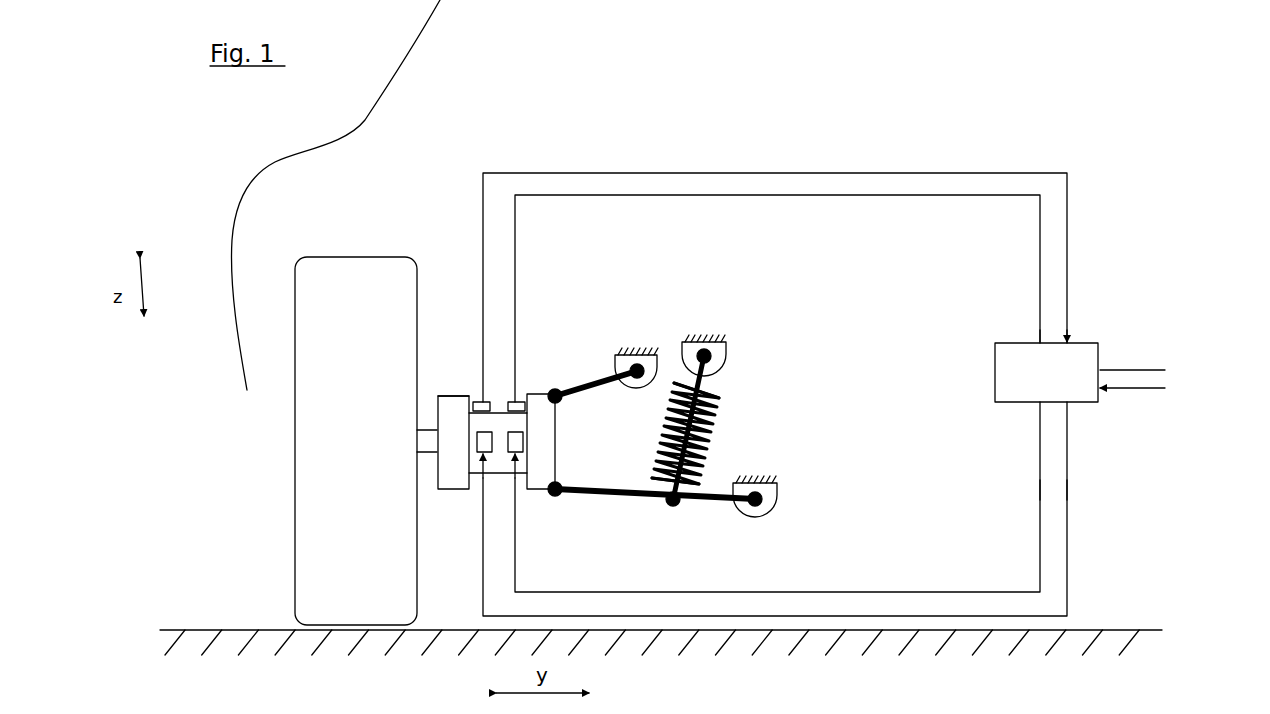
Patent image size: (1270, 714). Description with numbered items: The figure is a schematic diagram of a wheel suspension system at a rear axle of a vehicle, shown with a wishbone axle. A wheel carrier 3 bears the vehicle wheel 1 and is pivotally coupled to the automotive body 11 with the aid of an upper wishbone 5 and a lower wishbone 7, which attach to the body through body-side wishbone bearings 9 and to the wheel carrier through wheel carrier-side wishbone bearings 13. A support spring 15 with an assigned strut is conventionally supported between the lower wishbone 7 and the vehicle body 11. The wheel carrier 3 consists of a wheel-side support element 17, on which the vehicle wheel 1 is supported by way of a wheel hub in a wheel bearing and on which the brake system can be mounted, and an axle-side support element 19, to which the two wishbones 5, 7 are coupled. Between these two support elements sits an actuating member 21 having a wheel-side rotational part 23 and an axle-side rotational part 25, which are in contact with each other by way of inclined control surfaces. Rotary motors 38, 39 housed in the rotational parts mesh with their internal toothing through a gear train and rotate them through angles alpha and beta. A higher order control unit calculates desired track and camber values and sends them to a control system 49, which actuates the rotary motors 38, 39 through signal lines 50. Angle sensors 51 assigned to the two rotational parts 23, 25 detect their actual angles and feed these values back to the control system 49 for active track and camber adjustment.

The vehicle wheel 1 is at (375, 257).
The wheel carrier 3 is at (453, 389).
The upper wishbone 5 is at (587, 384).
The lower wishbone 7 is at (700, 502).
The body-side wishbone bearings 9 is at (638, 379).
The automotive body 11 is at (624, 348).
The wheel carrier-side wishbone bearings 13 is at (556, 390).
The support spring 15 is at (717, 413).
The wheel-side support element 17 is at (455, 481).
The axle-side support element 19 is at (558, 438).
The actuating member 21 is at (502, 403).
The wheel-side rotational part 23 is at (478, 424).
The axle-side rotational part 25 is at (530, 401).
The rotary motor 38 is at (500, 413).
The rotary motor 39 is at (503, 462).
The control system 49 is at (1107, 372).
The signal lines 50 is at (1040, 492).
The angle sensors 51 is at (473, 401).